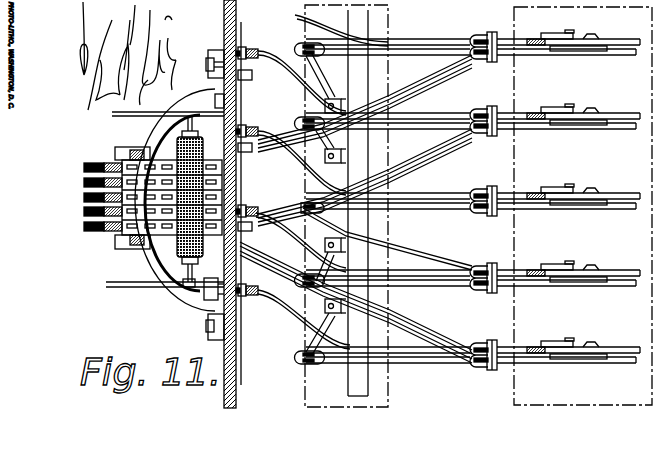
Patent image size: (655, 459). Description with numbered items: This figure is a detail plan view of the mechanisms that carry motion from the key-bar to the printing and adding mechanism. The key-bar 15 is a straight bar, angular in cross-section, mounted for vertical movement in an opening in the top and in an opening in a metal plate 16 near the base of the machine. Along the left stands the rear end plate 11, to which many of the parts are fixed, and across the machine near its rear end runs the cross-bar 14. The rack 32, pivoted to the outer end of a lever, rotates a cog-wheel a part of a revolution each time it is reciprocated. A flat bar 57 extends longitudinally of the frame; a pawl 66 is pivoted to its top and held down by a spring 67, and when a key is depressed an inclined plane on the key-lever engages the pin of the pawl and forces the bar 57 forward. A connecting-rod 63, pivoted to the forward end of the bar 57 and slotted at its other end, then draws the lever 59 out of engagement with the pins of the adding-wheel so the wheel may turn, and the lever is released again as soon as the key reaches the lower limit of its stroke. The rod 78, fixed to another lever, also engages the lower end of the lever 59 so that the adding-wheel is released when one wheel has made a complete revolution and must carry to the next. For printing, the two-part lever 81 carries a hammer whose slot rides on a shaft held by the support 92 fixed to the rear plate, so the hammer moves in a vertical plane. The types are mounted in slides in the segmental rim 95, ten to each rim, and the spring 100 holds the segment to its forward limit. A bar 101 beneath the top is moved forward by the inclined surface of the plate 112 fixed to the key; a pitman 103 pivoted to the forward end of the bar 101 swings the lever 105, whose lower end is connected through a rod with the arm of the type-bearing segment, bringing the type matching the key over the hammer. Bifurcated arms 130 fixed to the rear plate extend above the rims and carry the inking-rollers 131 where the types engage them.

The rear end plate 11 is at (236, 342).
The cross-bar 14 is at (380, 25).
The key-bar 15 is at (536, 46).
The metal plate 16 is at (583, 206).
The rack 32 is at (408, 40).
The flat bar 57 is at (518, 38).
The lever 59 is at (258, 55).
The connecting-rod 63 is at (292, 22).
The pawl 66 is at (558, 33).
The spring 67 is at (592, 34).
The rod 78 is at (241, 40).
The lever 81 is at (436, 70).
The support 92 is at (172, 104).
The segmental rim 95 is at (284, 228).
The spring 100 is at (118, 232).
The bar 101 is at (626, 48).
The pitman 103 is at (420, 50).
The lever 105 is at (322, 58).
The plate 112 is at (560, 50).
The bifurcated arms 130 is at (152, 116).
The inking-rollers 131 is at (190, 243).